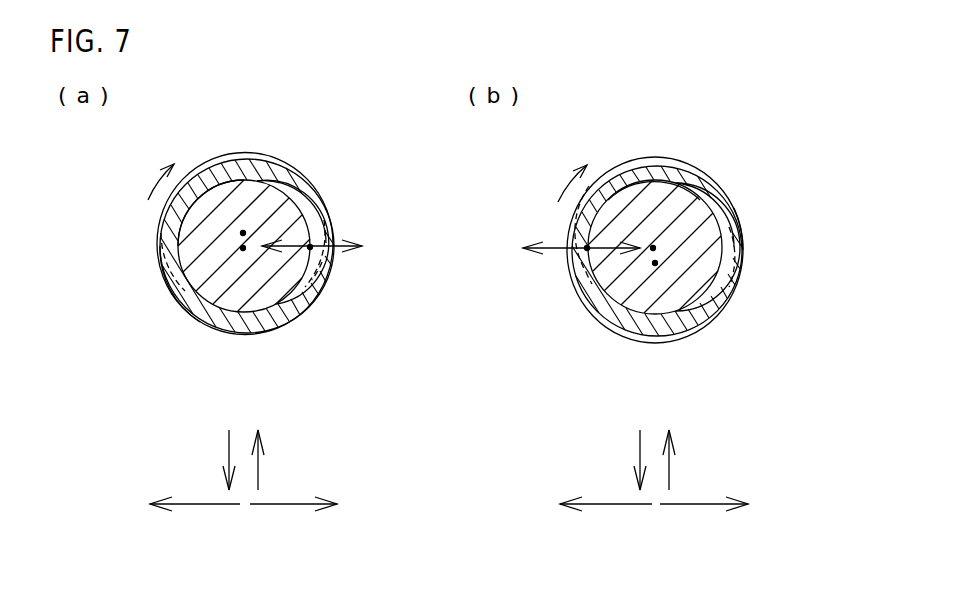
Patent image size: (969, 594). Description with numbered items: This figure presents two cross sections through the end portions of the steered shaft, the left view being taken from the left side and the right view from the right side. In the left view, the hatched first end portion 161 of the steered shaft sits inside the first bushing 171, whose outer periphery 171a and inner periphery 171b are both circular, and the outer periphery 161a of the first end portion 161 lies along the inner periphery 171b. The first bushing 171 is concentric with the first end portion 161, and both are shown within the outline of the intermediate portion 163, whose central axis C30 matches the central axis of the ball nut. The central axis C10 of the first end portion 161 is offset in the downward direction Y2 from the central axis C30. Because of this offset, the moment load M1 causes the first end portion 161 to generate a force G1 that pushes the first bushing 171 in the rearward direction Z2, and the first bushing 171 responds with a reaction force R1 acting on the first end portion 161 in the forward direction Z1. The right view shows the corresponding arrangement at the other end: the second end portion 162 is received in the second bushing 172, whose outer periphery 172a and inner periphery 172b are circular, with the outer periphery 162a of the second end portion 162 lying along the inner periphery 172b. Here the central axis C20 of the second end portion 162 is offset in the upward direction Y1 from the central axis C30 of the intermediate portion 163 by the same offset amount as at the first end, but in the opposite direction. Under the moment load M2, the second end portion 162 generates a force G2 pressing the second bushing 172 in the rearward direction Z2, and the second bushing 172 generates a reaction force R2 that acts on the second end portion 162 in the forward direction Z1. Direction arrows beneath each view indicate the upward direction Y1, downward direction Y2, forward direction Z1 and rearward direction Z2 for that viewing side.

The first end portion 161 is at (200, 237).
The outer periphery of the first end portion 161a is at (202, 192).
The second end portion 162 is at (612, 232).
The outer periphery of the second end portion 162a is at (660, 180).
The intermediate portion 163 is at (284, 164).
The first bushing 171 is at (288, 332).
The outer periphery of the first bushing 171a is at (168, 278).
The inner periphery of the first bushing 171b is at (262, 180).
The second bushing 172 is at (614, 166).
The outer periphery of the second bushing 172a is at (735, 212).
The inner periphery of the second bushing 172b is at (672, 192).
The moment load M1 is at (150, 178).
The moment load M2 is at (570, 177).
The central axis of the first end portion C10 is at (243, 250).
The central axis of the second end portion C20 is at (657, 248).
The central axis of the intermediate portion C30 is at (246, 233).
The force G1 is at (336, 254).
The force G2 is at (558, 252).
The reaction force R1 is at (318, 280).
The reaction force R2 is at (578, 282).
The upward direction Y1 is at (259, 468).
The downward direction Y2 is at (228, 444).
The forward direction Z1 is at (212, 506).
The rearward direction Z2 is at (284, 506).